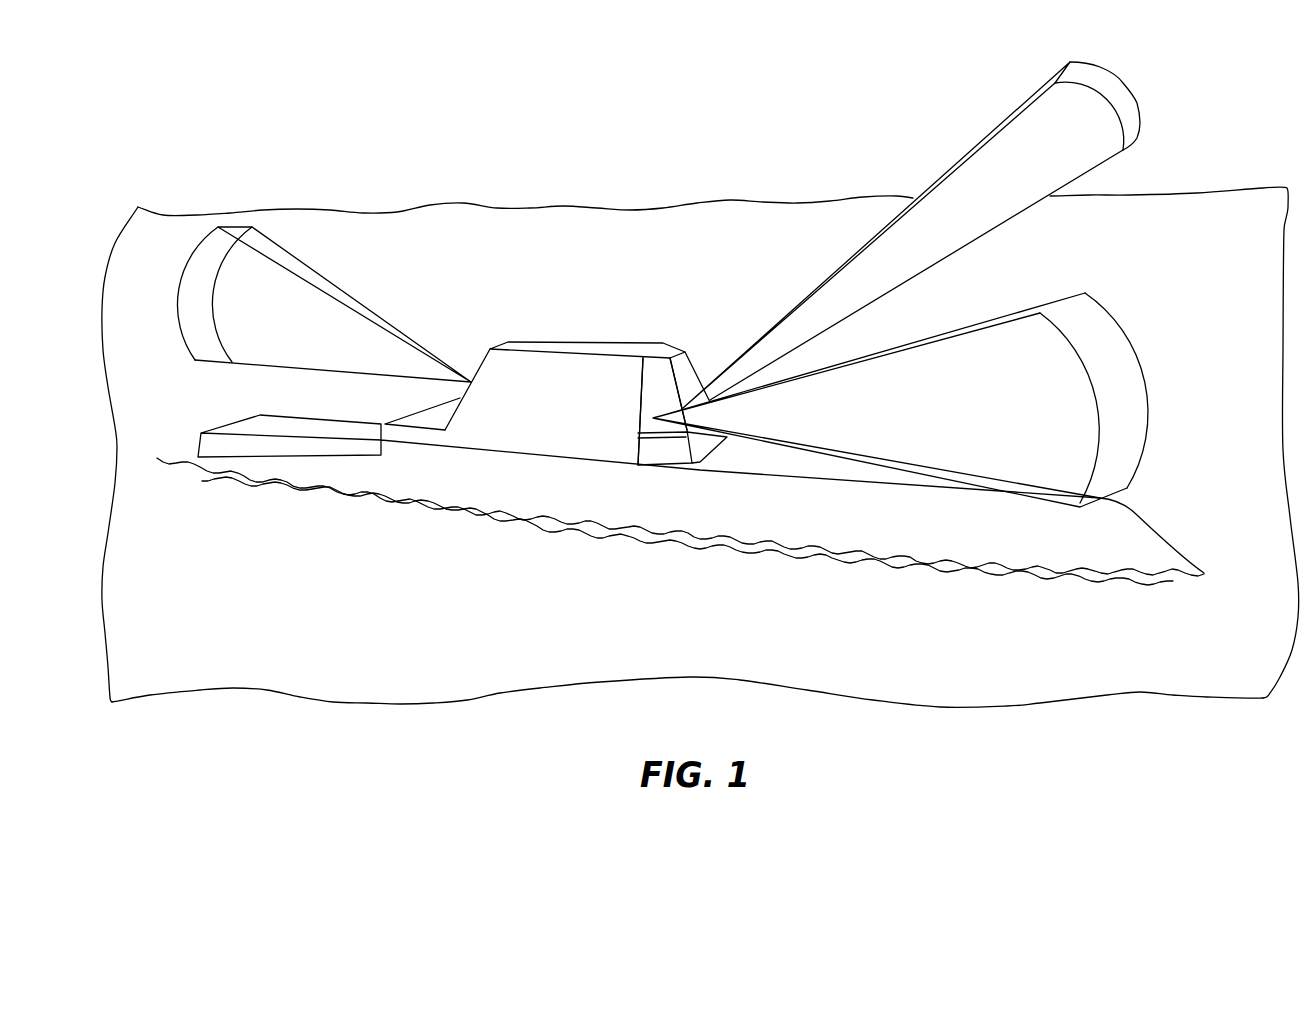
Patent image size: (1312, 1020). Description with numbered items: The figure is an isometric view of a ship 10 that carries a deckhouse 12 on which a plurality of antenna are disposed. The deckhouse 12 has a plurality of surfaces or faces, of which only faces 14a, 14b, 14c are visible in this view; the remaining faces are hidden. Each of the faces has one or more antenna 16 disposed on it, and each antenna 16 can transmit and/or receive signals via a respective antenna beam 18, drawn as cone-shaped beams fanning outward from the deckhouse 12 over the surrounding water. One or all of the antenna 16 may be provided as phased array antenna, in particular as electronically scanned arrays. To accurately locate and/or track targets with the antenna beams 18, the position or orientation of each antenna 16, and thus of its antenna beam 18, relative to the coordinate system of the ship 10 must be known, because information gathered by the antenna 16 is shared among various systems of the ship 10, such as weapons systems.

The ship 10 is at (509, 318).
The deckhouse 12 is at (593, 348).
The face 14a is at (530, 396).
The face 14b is at (657, 387).
The face 14c is at (688, 375).
The antenna 16 is at (662, 437).
The antenna beam 18 is at (330, 290).